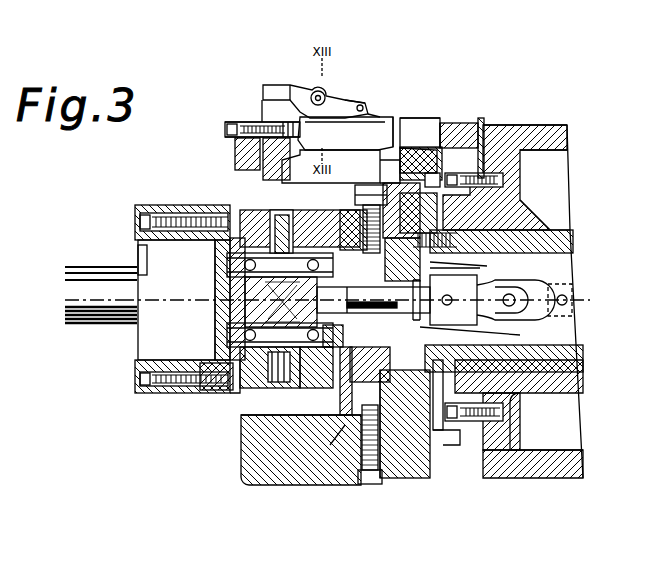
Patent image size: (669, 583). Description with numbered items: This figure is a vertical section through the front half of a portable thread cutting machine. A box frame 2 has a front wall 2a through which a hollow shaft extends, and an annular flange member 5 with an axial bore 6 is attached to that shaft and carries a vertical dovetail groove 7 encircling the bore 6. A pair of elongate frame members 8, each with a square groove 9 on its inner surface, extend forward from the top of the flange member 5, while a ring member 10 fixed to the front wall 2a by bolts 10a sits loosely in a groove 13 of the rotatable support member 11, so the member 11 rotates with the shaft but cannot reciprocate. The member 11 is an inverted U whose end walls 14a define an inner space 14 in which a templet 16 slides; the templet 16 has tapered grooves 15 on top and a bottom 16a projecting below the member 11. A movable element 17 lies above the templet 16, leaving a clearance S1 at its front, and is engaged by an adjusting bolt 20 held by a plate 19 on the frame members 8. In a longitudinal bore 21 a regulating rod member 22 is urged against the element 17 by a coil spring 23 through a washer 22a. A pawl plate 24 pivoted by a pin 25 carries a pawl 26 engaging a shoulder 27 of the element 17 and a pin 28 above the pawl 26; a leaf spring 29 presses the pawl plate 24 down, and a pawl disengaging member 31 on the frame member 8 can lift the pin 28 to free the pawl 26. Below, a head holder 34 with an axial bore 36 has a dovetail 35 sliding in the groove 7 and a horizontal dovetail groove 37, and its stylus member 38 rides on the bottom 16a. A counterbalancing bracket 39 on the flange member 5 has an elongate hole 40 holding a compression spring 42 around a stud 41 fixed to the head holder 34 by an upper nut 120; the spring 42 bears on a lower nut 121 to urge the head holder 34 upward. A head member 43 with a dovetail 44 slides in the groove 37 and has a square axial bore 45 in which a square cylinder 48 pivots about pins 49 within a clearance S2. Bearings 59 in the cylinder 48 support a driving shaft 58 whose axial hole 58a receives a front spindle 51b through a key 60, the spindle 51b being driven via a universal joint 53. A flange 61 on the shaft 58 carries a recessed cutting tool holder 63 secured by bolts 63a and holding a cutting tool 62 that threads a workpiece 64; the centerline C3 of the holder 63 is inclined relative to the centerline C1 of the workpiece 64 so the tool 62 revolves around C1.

The box frame 2 is at (548, 128).
The front wall 2a is at (500, 478).
The annular flange member 5 is at (518, 196).
The axial bore 6 is at (559, 208).
The dovetail groove 7 is at (400, 460).
The frame members 8 is at (490, 177).
The groove 9 is at (236, 122).
The ring member 10 is at (515, 126).
The bolts 10a is at (500, 182).
The rotatable support member 11 is at (275, 212).
The groove 13 is at (455, 135).
The open inner space 14 is at (285, 220).
The end walls 14a is at (262, 116).
The tapered grooves 15 is at (385, 138).
The templet 16 is at (331, 163).
The bottom 16a is at (369, 169).
The movable element 17 is at (345, 132).
The plate 19 is at (228, 133).
The adjusting bolt 20 is at (250, 122).
The longitudinal bore 21 is at (437, 125).
The regulating rod member 22 is at (418, 118).
The washer 22a is at (428, 116).
The coil spring 23 is at (475, 160).
The pawl plate 24 is at (360, 104).
The pin 25 is at (372, 118).
The pawl 26 is at (332, 108).
The shoulder 27 is at (362, 115).
The pin 28 is at (318, 90).
The leaf spring 29 is at (296, 86).
The pawl disengaging member 31 is at (410, 100).
The head holder 34 is at (363, 347).
The dovetail 35 is at (420, 470).
The axial bore 36 is at (437, 432).
The dovetail groove 37 is at (348, 385).
The stylus member 38 is at (355, 196).
The counterbalancing bracket 39 is at (258, 486).
The elongate hole 40 is at (345, 470).
The stud 41 is at (370, 478).
The compression spring 42 is at (380, 478).
The head member 43 is at (240, 398).
The dovetail 44 is at (305, 388).
The axial bore 45 is at (255, 388).
The square cylinder 48 is at (228, 392).
The pins 49 is at (245, 212).
The front spindle 51b is at (436, 266).
The universal joint 53 is at (548, 285).
The driving shaft 58 is at (240, 300).
The axial hole 58a is at (240, 318).
The bearings 59 is at (240, 272).
The key 60 is at (530, 388).
The flange 61 is at (205, 205).
The cutting tool 62 is at (138, 262).
The cutting tool holder 63 is at (153, 206).
The bolts 63a is at (142, 215).
The workpiece 64 is at (97, 272).
The upper nut 120 is at (305, 482).
The lower nut 121 is at (340, 425).
The clearance S1 is at (290, 120).
The clearance S2 is at (282, 300).
The axial centerline of the workpiece C1 is at (120, 328).
The axial centerline of the cutting tool holder C3 is at (530, 337).